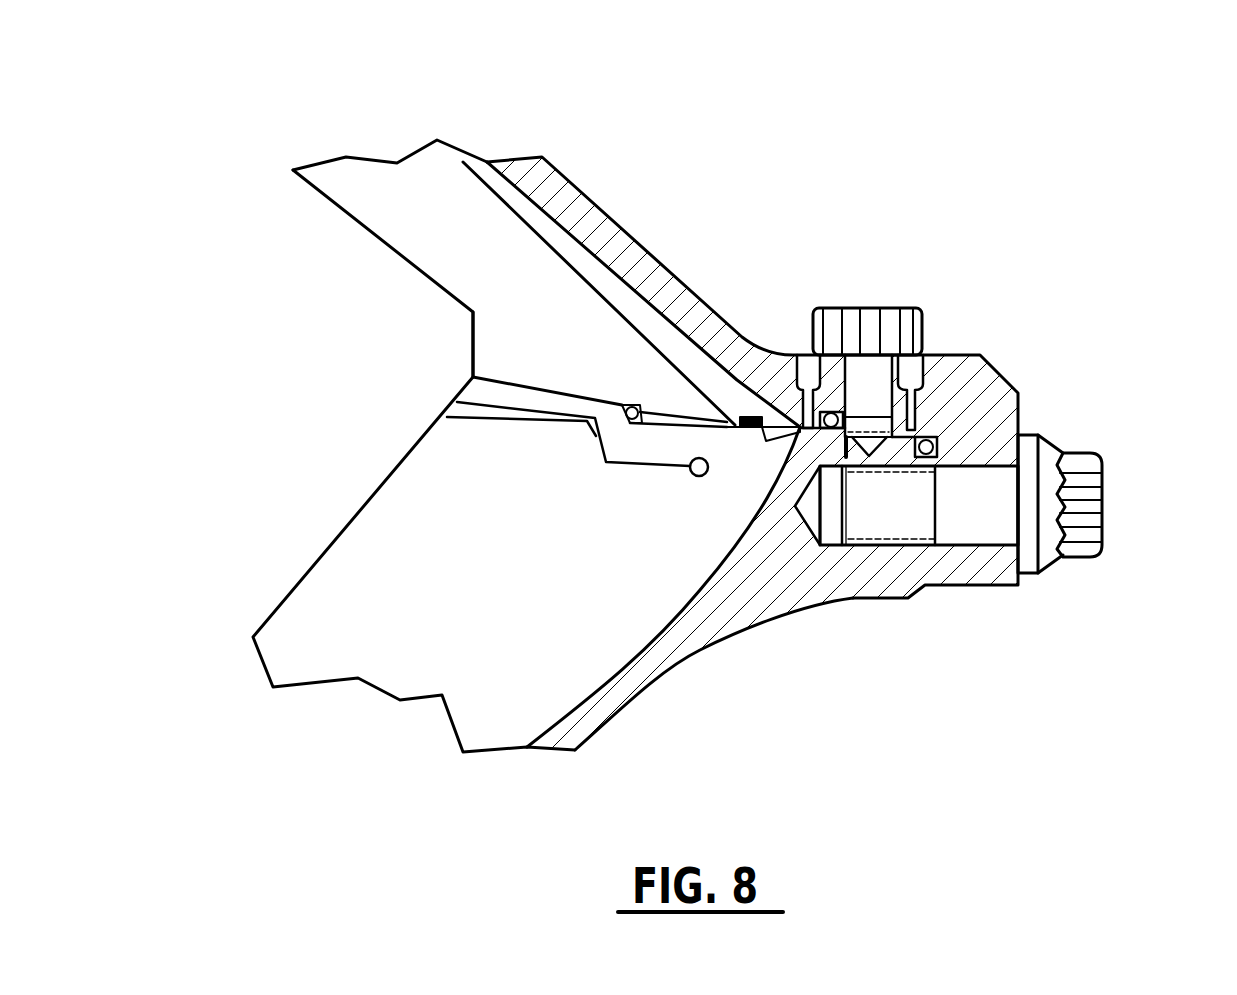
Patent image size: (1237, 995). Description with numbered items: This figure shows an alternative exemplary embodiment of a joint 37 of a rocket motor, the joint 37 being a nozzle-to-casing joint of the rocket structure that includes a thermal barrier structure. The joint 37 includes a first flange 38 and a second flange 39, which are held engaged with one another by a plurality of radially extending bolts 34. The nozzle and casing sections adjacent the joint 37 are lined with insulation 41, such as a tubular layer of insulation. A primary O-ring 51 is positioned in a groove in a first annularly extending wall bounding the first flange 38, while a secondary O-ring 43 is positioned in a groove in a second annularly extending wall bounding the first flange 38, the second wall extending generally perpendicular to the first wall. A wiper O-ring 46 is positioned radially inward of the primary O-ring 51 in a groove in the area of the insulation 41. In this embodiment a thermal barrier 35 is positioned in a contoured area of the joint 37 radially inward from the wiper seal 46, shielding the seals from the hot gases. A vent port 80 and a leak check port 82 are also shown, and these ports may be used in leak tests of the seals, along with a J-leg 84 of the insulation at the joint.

The radially extending bolts 34 is at (1040, 540).
The thermal barrier 35 is at (630, 407).
The joint 37 is at (498, 378).
The first flange 38 is at (985, 362).
The second flange 39 is at (852, 606).
The insulation 41 is at (360, 650).
The secondary O-ring 43 is at (937, 450).
The wiper O-ring 46 is at (745, 592).
The primary O-ring 51 is at (926, 602).
The vent port 80 is at (859, 294).
The leak check port 82 is at (998, 291).
The J-leg 84 is at (494, 439).